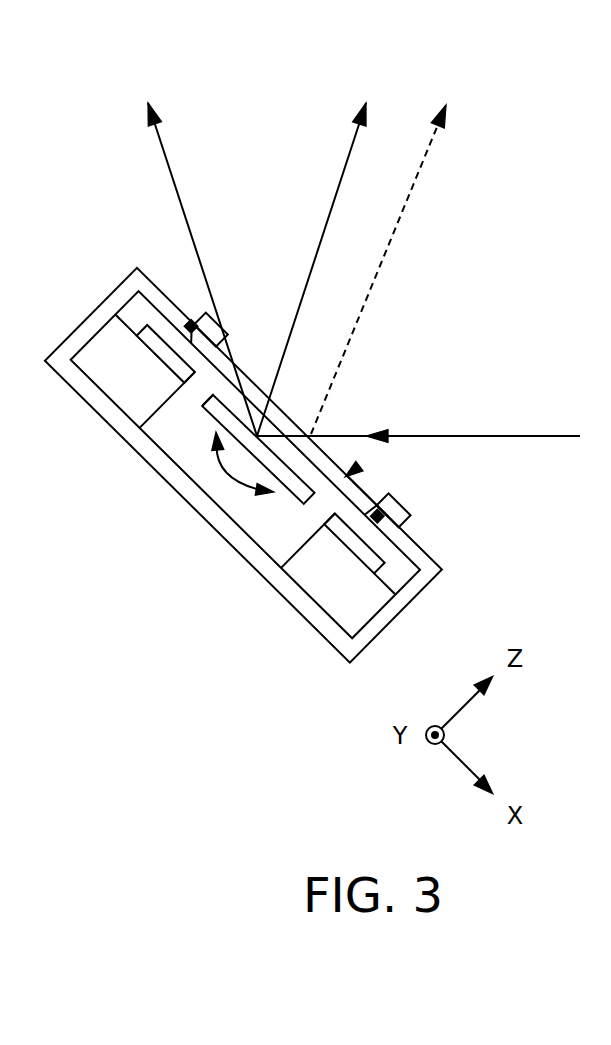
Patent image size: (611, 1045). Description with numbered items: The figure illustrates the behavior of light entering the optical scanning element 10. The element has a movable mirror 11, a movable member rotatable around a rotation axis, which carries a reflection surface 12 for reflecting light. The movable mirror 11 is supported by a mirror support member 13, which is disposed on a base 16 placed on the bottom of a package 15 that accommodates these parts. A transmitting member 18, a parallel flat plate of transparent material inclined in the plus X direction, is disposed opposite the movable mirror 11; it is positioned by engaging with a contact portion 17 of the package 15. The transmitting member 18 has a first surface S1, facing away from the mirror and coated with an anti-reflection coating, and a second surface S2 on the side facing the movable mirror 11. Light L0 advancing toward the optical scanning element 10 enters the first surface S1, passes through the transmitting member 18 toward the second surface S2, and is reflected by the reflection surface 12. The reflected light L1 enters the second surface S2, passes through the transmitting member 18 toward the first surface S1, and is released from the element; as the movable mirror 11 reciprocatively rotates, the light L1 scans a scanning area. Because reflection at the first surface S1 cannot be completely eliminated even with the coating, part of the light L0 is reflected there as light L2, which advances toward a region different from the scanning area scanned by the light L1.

The optical scanning element 10 is at (128, 212).
The movable mirror 11 is at (303, 496).
The reflection surface 12 is at (225, 395).
The mirror support member 13 is at (145, 326).
The package 15 is at (298, 598).
The base 16 is at (343, 613).
The contact portion 17 is at (192, 326).
The transmitting member 18 is at (359, 466).
The first surface S1 is at (363, 500).
The second surface S2 is at (225, 368).
The light L0 is at (522, 436).
The light L1 is at (140, 96).
The light L2 is at (428, 172).